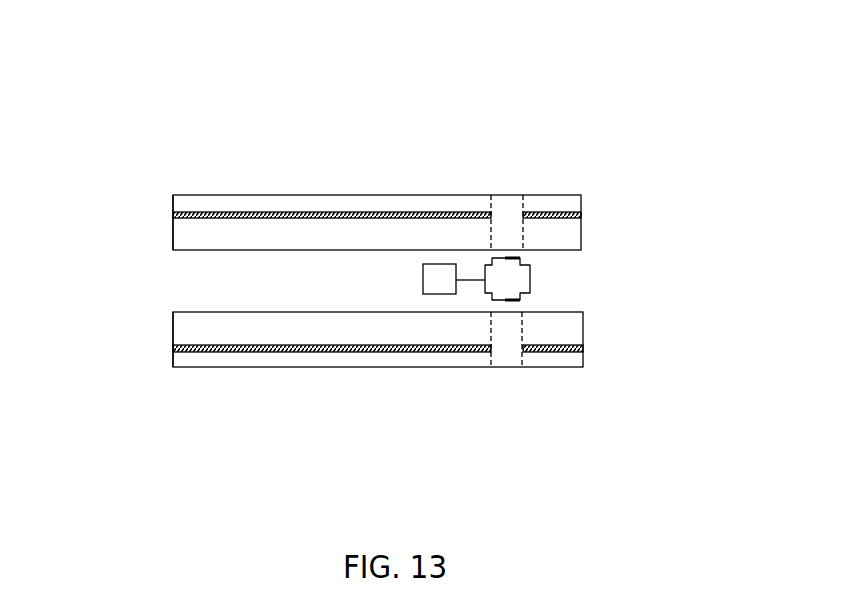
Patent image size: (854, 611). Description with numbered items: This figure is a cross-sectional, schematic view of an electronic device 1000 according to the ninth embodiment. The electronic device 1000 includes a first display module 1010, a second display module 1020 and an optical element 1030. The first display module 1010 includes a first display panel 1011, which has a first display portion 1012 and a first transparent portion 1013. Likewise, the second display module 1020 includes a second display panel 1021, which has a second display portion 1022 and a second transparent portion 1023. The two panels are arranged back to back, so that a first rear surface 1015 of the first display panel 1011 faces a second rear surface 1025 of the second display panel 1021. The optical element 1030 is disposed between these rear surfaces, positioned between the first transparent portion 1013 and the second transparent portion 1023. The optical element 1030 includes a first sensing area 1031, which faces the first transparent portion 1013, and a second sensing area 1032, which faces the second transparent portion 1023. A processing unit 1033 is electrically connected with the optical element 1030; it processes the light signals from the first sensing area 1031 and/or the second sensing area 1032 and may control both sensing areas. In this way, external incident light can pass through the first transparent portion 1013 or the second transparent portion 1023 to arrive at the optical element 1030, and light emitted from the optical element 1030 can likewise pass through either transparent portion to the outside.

The electronic device 1000 is at (427, 66).
The first display module 1010 is at (178, 198).
The first display panel 1011 is at (166, 256).
The first display portion 1012 is at (347, 230).
The first transparent portion 1013 is at (508, 230).
The first rear surface 1015 is at (372, 260).
The second display module 1020 is at (577, 366).
The second display panel 1021 is at (162, 328).
The second display portion 1022 is at (276, 337).
The second transparent portion 1023 is at (505, 330).
The second rear surface 1025 is at (237, 300).
The optical element 1030 is at (512, 277).
The first sensing area 1031 is at (522, 260).
The second sensing area 1032 is at (520, 298).
The processing unit 1033 is at (438, 294).